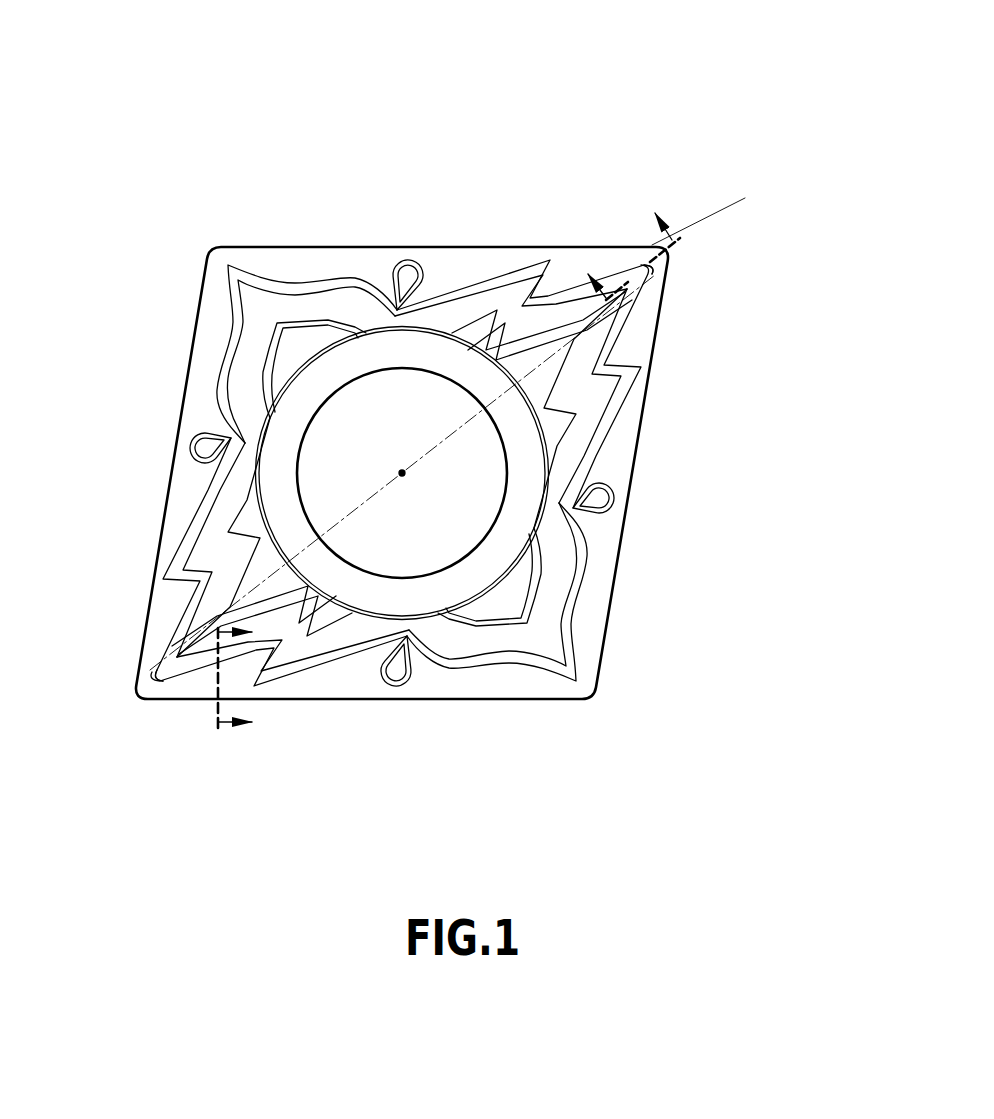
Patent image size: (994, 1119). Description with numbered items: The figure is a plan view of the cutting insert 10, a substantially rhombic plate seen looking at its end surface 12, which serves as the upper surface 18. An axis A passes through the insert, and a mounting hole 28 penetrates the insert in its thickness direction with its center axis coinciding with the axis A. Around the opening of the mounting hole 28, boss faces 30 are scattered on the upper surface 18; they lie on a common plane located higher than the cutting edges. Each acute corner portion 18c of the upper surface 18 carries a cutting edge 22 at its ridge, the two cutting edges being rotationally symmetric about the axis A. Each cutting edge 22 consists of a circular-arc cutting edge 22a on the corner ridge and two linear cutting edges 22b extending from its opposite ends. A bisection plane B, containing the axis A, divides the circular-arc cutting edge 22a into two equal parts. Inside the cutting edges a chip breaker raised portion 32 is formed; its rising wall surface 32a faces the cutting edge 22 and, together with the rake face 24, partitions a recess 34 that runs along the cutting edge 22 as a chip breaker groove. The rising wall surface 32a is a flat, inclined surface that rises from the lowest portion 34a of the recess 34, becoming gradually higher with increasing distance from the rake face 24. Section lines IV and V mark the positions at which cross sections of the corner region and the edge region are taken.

The cutting insert 10 is at (207, 99).
The end surface 12 is at (318, 246).
The upper surface 18 is at (370, 262).
The acute corner portion 18c is at (772, 207).
The cutting edge 22 is at (666, 267).
The circular-arc cutting edge 22a is at (668, 260).
The linear cutting edge 22b is at (652, 258).
The rake face 24 is at (640, 265).
The mounting hole 28 is at (333, 396).
The boss face 30 is at (300, 300).
The chip breaker raised portion 32 is at (622, 330).
The rising wall surface 32a is at (628, 310).
The recess 34 is at (650, 278).
The lowest portion of the recess 34a is at (638, 298).
The axis A is at (404, 476).
The bisection plane B is at (712, 208).
The section line IV is at (622, 245).
The section line V is at (243, 676).